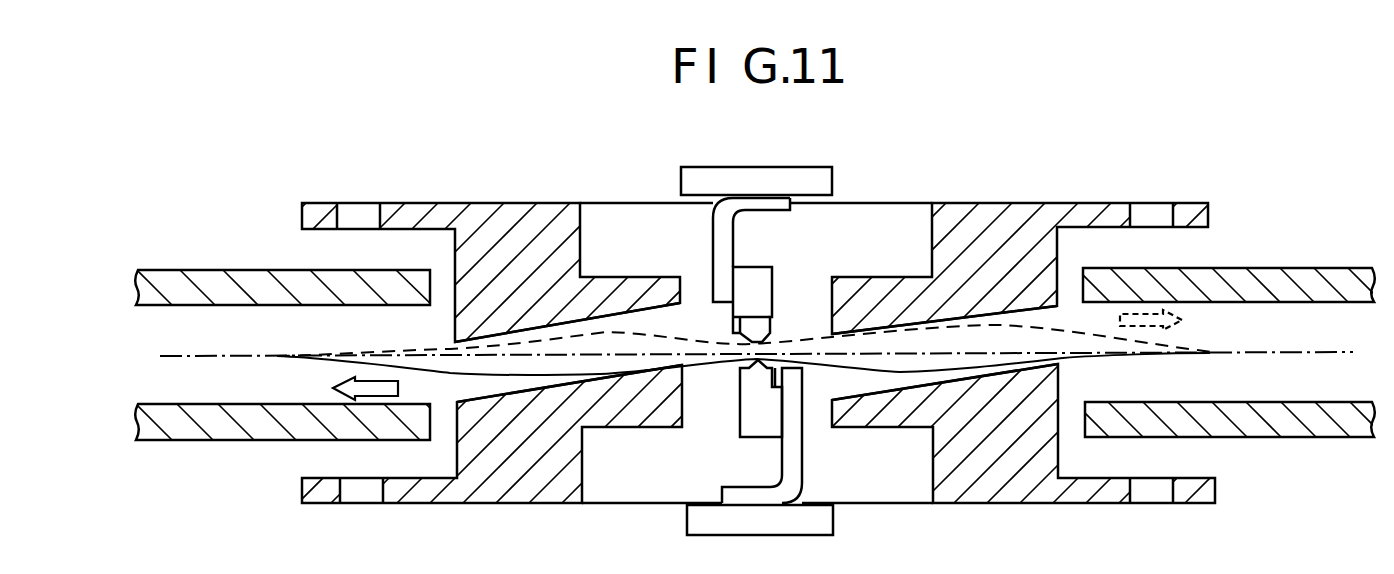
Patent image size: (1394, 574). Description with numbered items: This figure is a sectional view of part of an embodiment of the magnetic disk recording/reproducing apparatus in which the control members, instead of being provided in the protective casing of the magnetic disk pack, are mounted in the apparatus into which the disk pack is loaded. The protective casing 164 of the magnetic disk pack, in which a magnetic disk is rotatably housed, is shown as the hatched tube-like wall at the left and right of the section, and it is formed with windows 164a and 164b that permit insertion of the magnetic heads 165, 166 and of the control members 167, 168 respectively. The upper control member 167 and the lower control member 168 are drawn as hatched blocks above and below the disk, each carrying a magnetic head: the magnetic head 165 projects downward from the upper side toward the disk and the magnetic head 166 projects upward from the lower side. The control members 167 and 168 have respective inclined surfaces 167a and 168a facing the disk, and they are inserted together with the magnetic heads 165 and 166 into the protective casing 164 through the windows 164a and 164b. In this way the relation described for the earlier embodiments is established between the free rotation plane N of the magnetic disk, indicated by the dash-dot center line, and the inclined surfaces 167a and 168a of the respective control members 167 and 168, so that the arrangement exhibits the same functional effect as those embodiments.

The protective casing 164 is at (1227, 340).
The window 164a is at (1070, 272).
The window 164b is at (1075, 455).
The magnetic head 165 is at (772, 320).
The magnetic head 166 is at (740, 380).
The control member 167 is at (1047, 207).
The inclined surface 167a is at (587, 321).
The control member 168 is at (1008, 490).
The inclined surface 168a is at (513, 393).
The free rotation plane N is at (1273, 356).